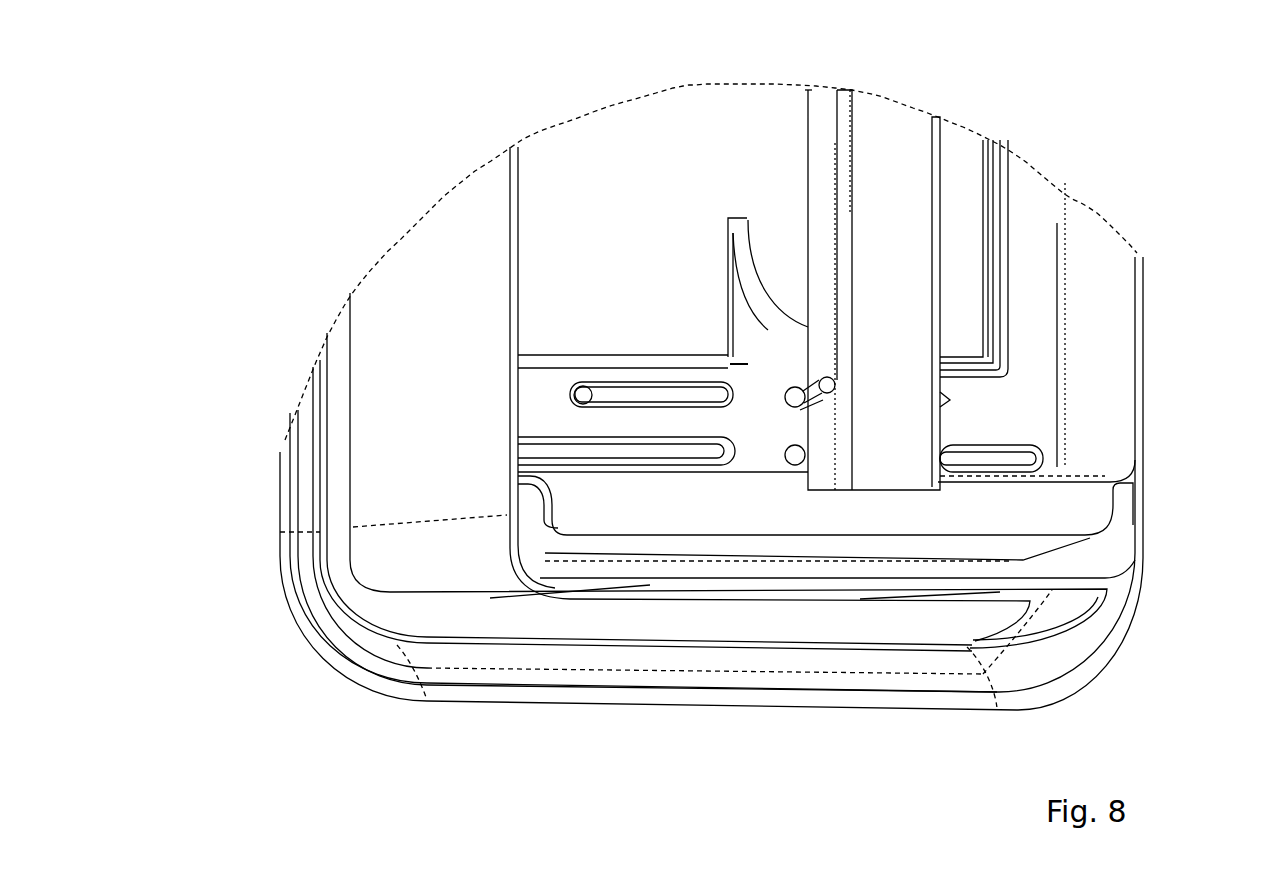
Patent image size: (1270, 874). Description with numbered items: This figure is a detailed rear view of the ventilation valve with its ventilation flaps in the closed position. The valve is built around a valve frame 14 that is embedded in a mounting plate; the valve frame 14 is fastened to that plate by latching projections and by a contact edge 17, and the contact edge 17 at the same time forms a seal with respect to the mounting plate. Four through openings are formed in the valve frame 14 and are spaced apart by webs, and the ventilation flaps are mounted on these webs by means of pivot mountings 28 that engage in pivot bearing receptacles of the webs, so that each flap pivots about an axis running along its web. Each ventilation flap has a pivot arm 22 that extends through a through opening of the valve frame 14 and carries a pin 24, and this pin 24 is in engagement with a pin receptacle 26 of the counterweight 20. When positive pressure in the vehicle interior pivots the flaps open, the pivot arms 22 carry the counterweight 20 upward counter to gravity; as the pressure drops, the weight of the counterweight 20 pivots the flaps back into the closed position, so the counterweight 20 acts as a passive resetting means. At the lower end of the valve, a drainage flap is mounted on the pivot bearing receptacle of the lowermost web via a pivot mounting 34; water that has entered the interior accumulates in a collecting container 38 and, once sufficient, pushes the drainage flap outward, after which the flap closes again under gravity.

The valve frame 14 is at (1107, 408).
The contact edge 17 is at (370, 667).
The counterweight 20 is at (902, 165).
The pivot arm 22 is at (800, 333).
The pin 24 is at (790, 380).
The pin receptacle 26 is at (823, 362).
The pivot mounting 28 is at (602, 392).
The pivot mounting 34 is at (537, 448).
The collecting container 38 is at (1030, 520).